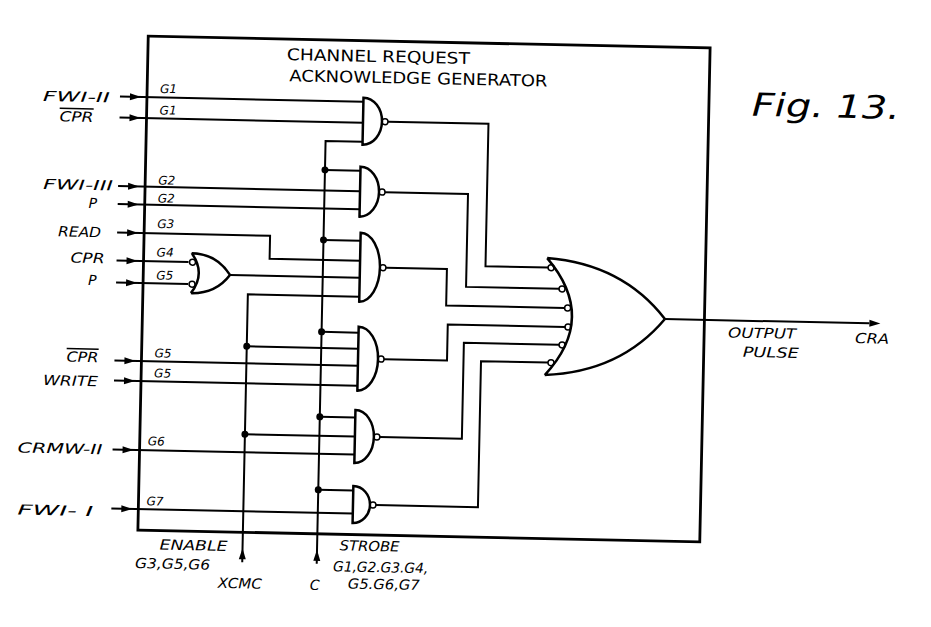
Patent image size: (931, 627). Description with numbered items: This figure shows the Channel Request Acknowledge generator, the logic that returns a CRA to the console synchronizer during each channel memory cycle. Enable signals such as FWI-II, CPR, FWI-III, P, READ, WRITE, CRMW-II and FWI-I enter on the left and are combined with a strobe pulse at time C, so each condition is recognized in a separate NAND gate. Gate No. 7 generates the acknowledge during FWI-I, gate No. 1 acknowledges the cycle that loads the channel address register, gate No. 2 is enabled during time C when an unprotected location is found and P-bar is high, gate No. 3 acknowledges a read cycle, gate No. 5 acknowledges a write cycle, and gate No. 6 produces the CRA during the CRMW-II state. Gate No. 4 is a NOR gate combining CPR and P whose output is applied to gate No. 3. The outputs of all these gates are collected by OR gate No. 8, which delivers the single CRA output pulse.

The gate No. 1 is at (456, 183).
The gate No. 2 is at (459, 228).
The gate No. 3 is at (462, 270).
The gate No. 4 is at (210, 273).
The gate No. 5 is at (461, 359).
The gate No. 6 is at (456, 404).
The gate No. 7 is at (450, 443).
The gate No. 8 is at (605, 317).